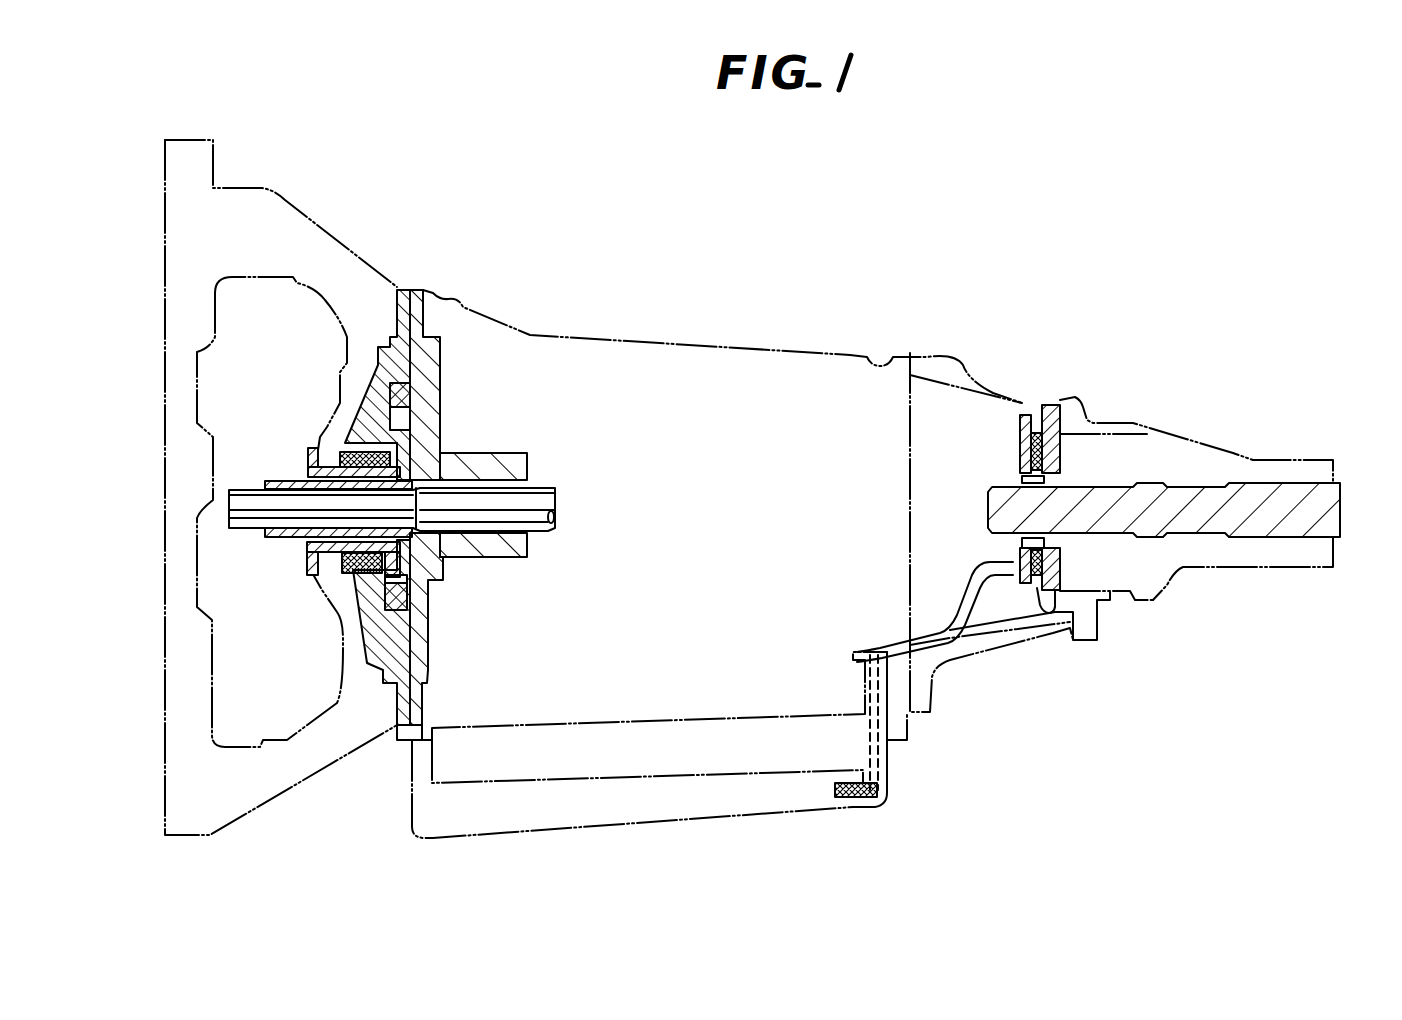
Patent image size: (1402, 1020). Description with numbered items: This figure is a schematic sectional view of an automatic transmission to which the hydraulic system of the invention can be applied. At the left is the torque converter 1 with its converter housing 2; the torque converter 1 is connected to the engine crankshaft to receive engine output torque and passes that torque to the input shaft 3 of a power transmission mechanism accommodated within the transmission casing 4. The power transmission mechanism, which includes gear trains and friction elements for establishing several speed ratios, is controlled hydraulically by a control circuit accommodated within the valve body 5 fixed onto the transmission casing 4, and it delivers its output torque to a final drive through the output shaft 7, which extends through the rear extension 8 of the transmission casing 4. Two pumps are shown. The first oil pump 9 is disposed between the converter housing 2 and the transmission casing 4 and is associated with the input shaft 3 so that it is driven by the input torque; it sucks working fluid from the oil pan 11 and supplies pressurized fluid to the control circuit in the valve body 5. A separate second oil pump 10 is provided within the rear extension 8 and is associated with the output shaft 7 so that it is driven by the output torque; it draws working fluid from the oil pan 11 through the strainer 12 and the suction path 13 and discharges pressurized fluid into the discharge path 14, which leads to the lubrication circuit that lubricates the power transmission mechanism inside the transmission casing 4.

The torque converter 1 is at (293, 270).
The converter housing 2 is at (283, 187).
The input shaft 3 is at (229, 520).
The transmission casing 4 is at (635, 340).
The valve body 5 is at (660, 777).
The output shaft 7 is at (1202, 525).
The rear extension 8 is at (1275, 568).
The oil pump 9 is at (376, 680).
The oil pump 10 is at (1033, 409).
The oil pan 11 is at (563, 832).
The strainer 12 is at (887, 797).
The suction path 13 is at (985, 600).
The discharge path 14 is at (1077, 640).